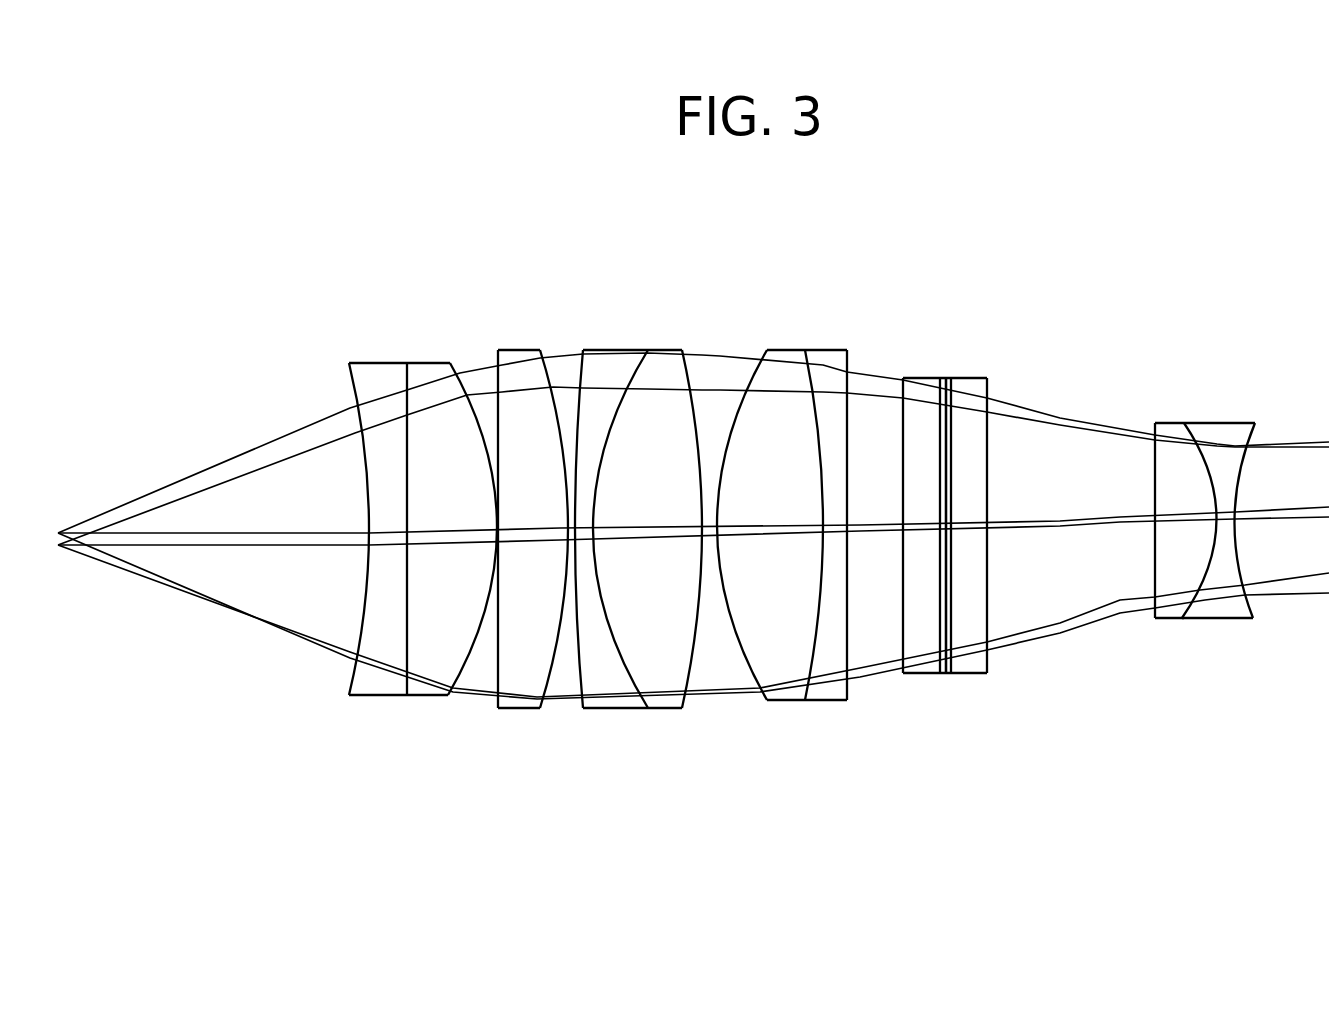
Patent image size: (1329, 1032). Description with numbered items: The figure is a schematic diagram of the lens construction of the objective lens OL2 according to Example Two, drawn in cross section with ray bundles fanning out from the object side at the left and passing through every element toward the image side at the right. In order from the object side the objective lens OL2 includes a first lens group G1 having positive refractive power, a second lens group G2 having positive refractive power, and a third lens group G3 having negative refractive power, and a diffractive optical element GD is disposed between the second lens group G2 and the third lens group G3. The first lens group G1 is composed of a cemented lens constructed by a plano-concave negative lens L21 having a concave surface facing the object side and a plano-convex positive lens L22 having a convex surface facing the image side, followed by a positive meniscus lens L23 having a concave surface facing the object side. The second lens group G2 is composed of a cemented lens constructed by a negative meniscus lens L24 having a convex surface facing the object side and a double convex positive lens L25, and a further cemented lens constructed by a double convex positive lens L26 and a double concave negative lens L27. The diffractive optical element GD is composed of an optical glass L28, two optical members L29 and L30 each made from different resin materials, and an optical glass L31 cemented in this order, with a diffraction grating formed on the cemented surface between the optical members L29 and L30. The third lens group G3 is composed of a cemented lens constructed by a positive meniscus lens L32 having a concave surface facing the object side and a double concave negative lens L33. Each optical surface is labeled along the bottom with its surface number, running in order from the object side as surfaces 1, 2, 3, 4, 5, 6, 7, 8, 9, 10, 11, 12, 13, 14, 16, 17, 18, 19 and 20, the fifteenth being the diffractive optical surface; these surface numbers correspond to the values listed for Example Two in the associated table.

The objective lens OL2 is at (1235, 226).
The first lens group G1 is at (563, 807).
The second lens group G2 is at (858, 807).
The third lens group G3 is at (1250, 805).
The diffractive optical element GD is at (1027, 266).
The plano-concave negative lens L21 is at (362, 512).
The plano-convex positive lens L22 is at (452, 517).
The positive meniscus lens L23 is at (516, 512).
The negative meniscus lens L24 is at (604, 508).
The double convex positive lens L25 is at (670, 508).
The double convex positive lens L26 is at (770, 508).
The double concave negative lens L27 is at (827, 508).
The optical glass L28 is at (899, 532).
The optical member L29 is at (956, 531).
The optical member L30 is at (970, 513).
The optical glass L31 is at (993, 532).
The positive meniscus lens L32 is at (1168, 512).
The double concave negative lens L33 is at (1228, 508).
The surface number 1 is at (350, 640).
The surface number 2 is at (400, 648).
The surface number 3 is at (470, 657).
The surface number 4 is at (500, 678).
The surface number 5 is at (557, 680).
The surface number 6 is at (583, 680).
The surface number 7 is at (648, 676).
The surface number 8 is at (690, 690).
The surface number 9 is at (752, 675).
The surface number 10 is at (803, 668).
The surface number 11 is at (857, 667).
The surface number 12 is at (900, 658).
The surface number 13 is at (932, 657).
The surface number 14 is at (947, 673).
The surface number 16 is at (955, 647).
The surface number 17 is at (990, 662).
The surface number 18 is at (1150, 590).
The surface number 19 is at (1200, 592).
The surface number 20 is at (1247, 590).